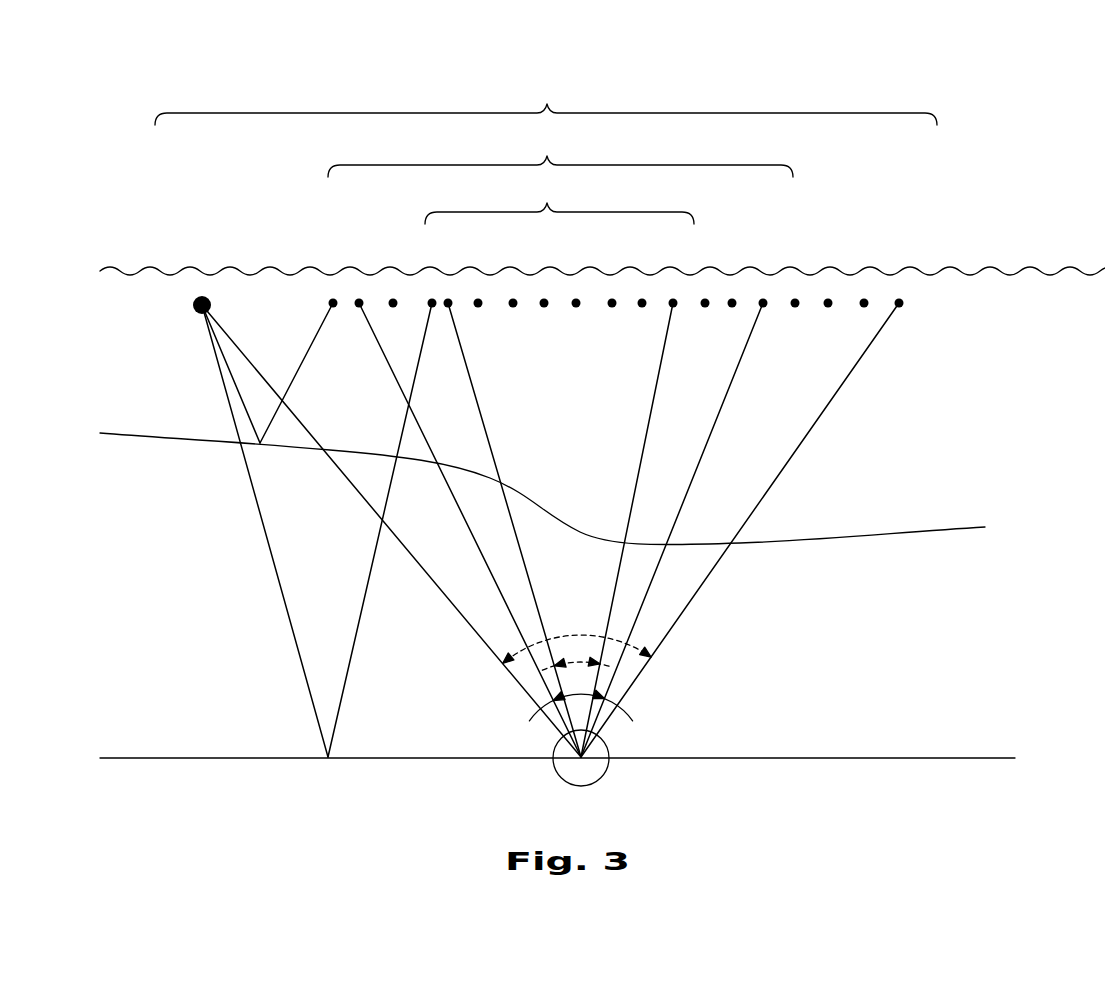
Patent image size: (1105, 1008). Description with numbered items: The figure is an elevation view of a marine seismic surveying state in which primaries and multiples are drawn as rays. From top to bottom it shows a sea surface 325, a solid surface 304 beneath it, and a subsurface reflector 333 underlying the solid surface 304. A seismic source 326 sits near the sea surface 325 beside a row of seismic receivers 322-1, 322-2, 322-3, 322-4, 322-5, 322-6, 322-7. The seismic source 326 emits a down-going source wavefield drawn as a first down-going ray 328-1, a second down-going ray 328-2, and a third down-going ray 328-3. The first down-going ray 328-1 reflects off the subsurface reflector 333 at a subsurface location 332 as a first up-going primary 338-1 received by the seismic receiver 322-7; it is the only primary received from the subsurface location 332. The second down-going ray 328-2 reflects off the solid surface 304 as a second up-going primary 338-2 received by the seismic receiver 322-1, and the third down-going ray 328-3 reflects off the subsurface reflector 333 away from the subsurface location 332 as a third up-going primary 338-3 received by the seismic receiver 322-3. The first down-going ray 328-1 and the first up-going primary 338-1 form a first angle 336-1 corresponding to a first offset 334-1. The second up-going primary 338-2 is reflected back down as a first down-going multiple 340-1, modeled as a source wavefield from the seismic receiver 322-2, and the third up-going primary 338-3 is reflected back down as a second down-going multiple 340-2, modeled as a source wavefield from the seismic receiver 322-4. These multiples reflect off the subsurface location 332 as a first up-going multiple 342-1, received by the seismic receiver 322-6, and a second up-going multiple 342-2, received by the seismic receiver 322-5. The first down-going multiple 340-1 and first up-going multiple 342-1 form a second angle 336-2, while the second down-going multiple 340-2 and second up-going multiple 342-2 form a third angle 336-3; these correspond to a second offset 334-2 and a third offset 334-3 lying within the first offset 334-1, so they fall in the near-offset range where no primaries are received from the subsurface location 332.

The solid surface 304 is at (933, 528).
The seismic receiver 322-1 is at (333, 300).
The seismic receiver 322-2 is at (360, 302).
The seismic receiver 322-3 is at (430, 302).
The seismic receiver 322-4 is at (450, 302).
The seismic receiver 322-5 is at (673, 302).
The seismic receiver 322-6 is at (763, 302).
The seismic receiver 322-7 is at (900, 302).
The sea surface 325 is at (1040, 274).
The seismic source 326 is at (196, 309).
The first down-going ray 328-1 is at (483, 640).
The second down-going ray 328-2 is at (232, 378).
The third down-going ray 328-3 is at (294, 640).
The subsurface location 332 is at (608, 768).
The subsurface reflector 333 is at (877, 756).
The first offset 334-1 is at (546, 102).
The second offset 334-2 is at (560, 152).
The third offset 334-3 is at (559, 199).
The first angle 336-1 is at (580, 635).
The second angle 336-2 is at (577, 658).
The third angle 336-3 is at (577, 692).
The first up-going primary 338-1 is at (664, 642).
The second up-going primary 338-2 is at (314, 340).
The third up-going primary 338-3 is at (377, 549).
The first down-going multiple 340-1 is at (383, 355).
The second down-going multiple 340-2 is at (463, 352).
The first up-going multiple 342-1 is at (745, 350).
The second up-going multiple 342-2 is at (662, 350).